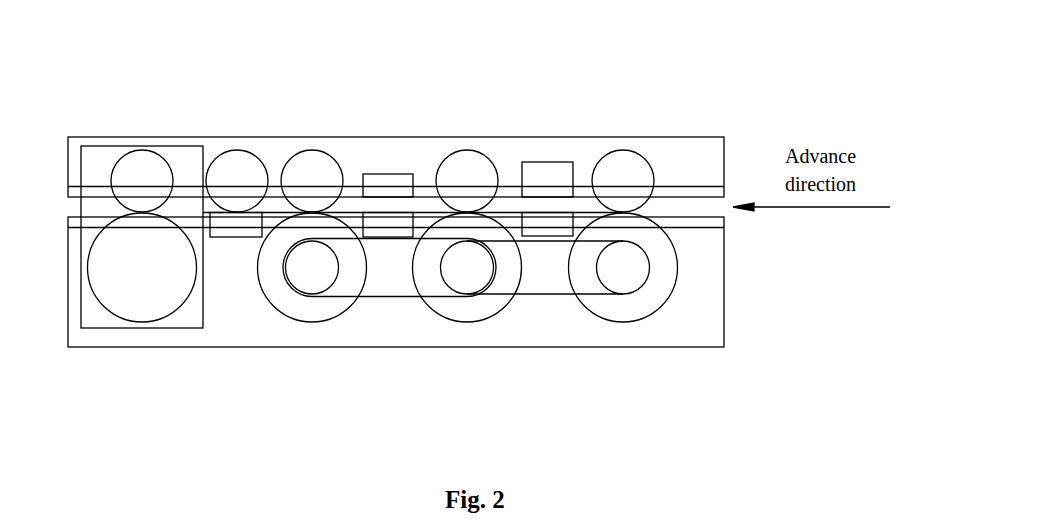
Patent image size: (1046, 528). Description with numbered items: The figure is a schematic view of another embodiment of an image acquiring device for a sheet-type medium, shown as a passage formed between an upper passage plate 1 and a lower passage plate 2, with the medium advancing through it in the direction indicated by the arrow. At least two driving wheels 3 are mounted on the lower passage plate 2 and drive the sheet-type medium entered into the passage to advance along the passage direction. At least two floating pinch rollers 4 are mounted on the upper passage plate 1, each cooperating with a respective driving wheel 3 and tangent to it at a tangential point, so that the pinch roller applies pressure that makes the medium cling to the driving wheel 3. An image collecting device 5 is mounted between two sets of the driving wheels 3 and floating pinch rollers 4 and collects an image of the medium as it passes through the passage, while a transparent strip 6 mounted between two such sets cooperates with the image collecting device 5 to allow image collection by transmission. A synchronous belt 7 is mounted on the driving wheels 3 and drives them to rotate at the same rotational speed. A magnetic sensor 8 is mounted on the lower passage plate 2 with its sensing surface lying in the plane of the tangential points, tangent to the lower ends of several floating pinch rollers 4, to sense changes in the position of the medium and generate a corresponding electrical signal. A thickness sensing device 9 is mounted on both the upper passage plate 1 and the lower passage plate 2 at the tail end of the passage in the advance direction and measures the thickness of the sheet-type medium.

The upper passage plate 1 is at (703, 190).
The lower passage plate 2 is at (724, 227).
The driving wheel 3 is at (134, 308).
The floating pinch roller 4 is at (145, 148).
The image collecting device 5 is at (552, 172).
The transparent strip 6 is at (390, 174).
The synchronous belt 7 is at (400, 297).
The magnetic sensor 8 is at (229, 237).
The thickness sensing device 9 is at (92, 144).